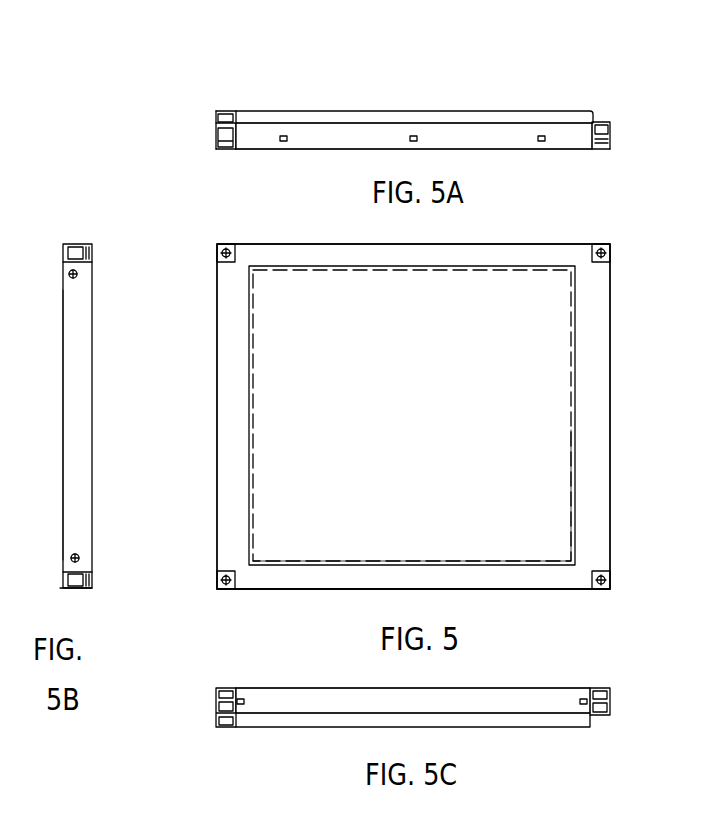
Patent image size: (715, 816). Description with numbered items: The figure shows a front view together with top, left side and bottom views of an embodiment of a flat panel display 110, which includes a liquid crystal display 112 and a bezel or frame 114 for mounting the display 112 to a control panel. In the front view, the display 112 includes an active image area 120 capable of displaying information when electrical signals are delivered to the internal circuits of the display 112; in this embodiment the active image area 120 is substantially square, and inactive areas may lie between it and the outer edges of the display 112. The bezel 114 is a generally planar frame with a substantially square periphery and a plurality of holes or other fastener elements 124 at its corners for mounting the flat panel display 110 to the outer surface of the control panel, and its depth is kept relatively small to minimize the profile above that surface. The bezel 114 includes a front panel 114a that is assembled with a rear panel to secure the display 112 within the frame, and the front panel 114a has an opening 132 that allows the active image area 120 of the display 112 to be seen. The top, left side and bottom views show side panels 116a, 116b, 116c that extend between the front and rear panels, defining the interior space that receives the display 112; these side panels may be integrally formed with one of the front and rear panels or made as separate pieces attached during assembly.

In FIG. 5, the flat panel display 110 is at (613, 214).
In FIG. 5, the liquid crystal display 112 is at (530, 400).
In FIG. 5A, the bezel or frame 114 is at (567, 92).
In FIG. 5, the bezel or frame 114 is at (614, 352).
In FIG. 5B, the bezel or frame 114 is at (114, 328).
In FIG. 5C, the bezel or frame 114 is at (543, 674).
In FIG. 5, the front panel 114a is at (305, 582).
In FIG. 5A, the side panel 116a is at (342, 137).
In FIG. 5B, the side panel 116b is at (84, 408).
In FIG. 5C, the side panel 116c is at (308, 703).
In FIG. 5, the active image area 120 is at (254, 412).
In FIG. 5, the fastener elements 124 is at (222, 250).
In FIG. 5, the opening 132 is at (571, 484).